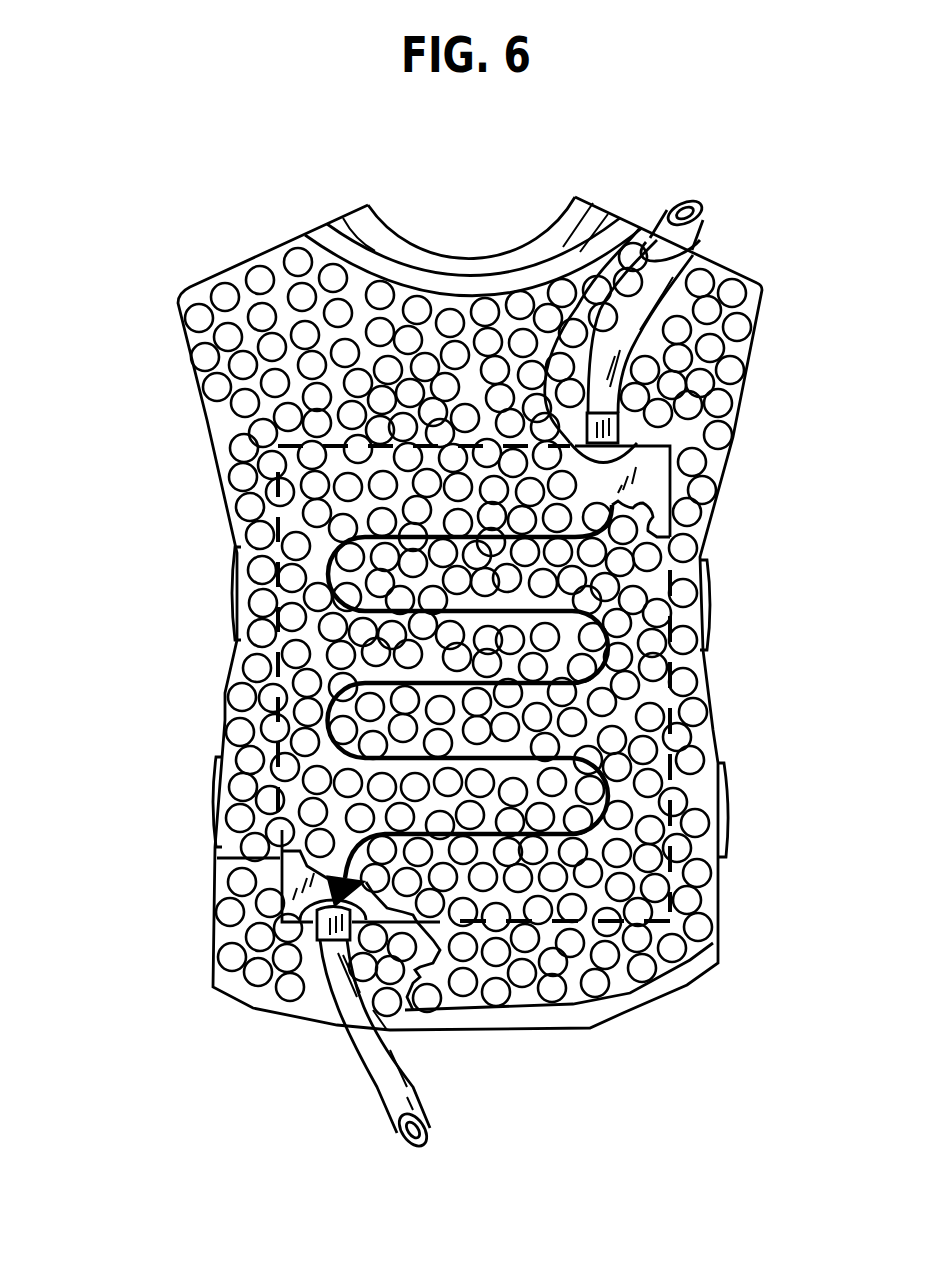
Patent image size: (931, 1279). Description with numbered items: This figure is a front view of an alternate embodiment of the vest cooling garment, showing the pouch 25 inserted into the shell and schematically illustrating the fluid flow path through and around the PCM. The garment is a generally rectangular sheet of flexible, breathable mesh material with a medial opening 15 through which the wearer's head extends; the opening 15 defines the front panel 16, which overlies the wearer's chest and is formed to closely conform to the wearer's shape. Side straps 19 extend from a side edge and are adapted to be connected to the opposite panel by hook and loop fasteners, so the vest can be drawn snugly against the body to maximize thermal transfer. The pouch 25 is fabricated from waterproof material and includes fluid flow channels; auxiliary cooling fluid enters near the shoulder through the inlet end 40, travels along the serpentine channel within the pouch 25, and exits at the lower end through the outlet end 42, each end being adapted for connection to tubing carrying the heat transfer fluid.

The opening 15 is at (392, 238).
The front panel 16 is at (227, 363).
The side straps 19 is at (232, 598).
The pouch 25 is at (657, 490).
The inlet end 40 is at (703, 208).
The outlet end 42 is at (430, 1135).